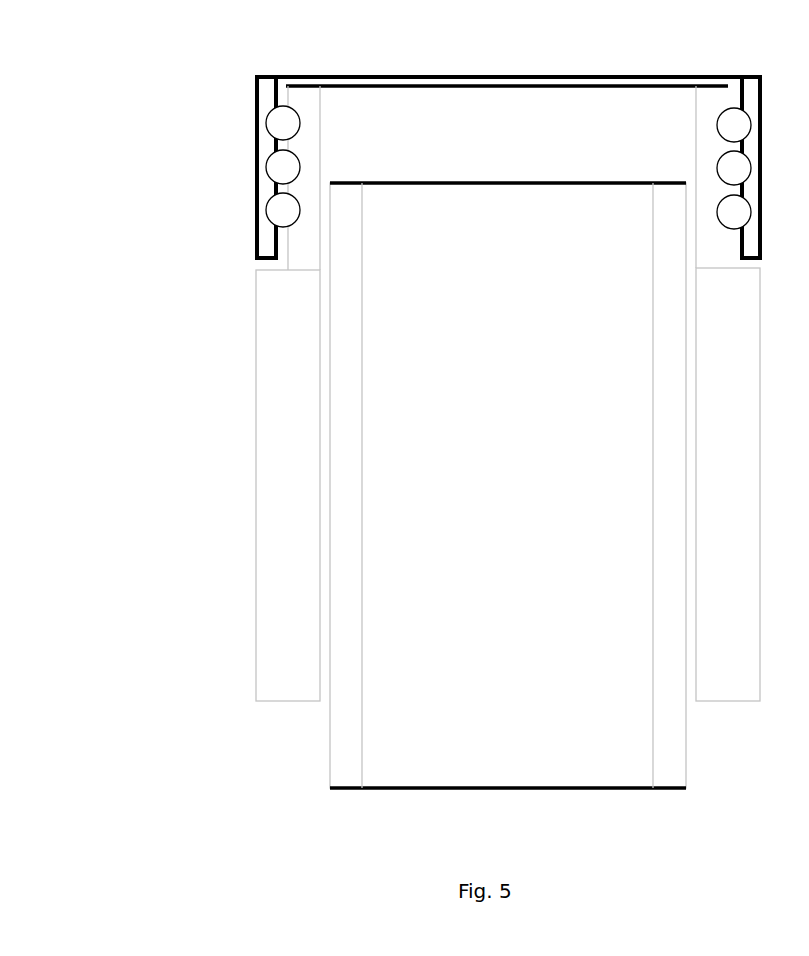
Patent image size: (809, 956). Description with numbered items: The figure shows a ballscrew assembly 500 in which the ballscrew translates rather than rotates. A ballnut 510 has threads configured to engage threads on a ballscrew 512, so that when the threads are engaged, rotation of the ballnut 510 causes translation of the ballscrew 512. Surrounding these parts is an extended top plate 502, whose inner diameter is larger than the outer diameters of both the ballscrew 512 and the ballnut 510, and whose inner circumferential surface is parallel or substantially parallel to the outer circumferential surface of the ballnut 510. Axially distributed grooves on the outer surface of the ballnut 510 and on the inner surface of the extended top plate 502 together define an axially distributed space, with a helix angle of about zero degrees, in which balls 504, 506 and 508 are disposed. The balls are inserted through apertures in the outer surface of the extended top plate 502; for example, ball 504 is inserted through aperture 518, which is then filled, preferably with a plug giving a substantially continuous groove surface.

The ballscrew assembly 500 is at (136, 82).
The extended top plate 502 is at (704, 75).
The ball 504 is at (281, 128).
The ball 506 is at (280, 168).
The ball 508 is at (280, 212).
The ballnut 510 is at (267, 374).
The ballscrew 512 is at (348, 452).
The aperture 518 is at (256, 118).